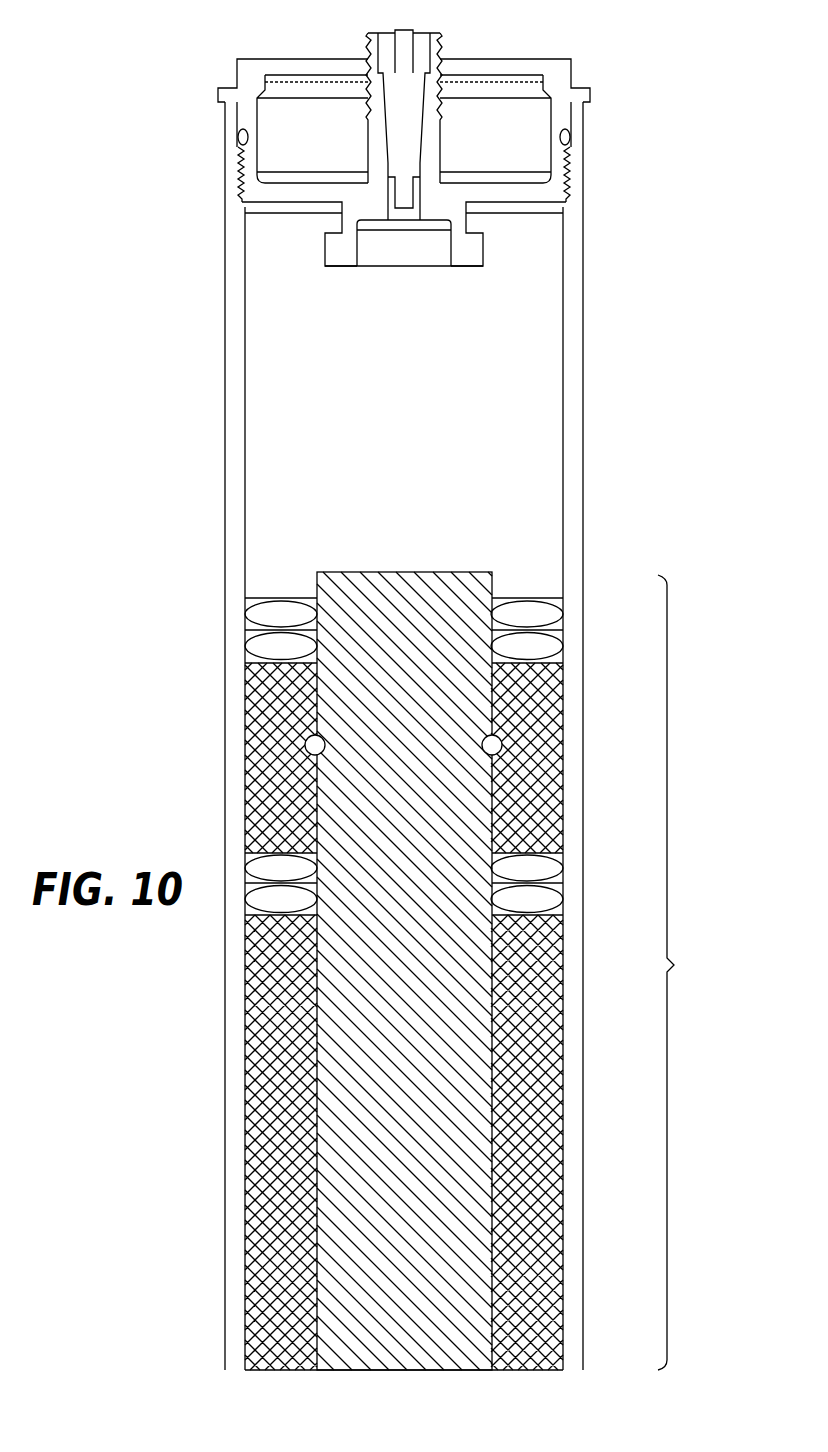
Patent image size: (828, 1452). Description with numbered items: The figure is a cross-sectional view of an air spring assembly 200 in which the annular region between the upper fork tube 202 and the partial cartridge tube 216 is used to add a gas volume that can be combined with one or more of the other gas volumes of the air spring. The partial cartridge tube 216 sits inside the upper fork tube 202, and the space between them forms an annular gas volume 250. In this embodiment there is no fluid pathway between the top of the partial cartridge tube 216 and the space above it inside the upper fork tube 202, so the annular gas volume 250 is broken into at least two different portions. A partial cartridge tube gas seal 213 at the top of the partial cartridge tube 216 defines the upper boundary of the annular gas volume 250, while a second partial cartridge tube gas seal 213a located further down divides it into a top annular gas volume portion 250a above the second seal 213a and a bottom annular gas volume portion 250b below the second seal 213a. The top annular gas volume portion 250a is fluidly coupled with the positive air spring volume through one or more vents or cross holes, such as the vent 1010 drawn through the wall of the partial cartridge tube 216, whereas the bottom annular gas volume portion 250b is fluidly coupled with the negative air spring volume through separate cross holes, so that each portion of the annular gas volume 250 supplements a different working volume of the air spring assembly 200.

The air spring assembly 200 is at (520, 34).
The upper fork tube 202 is at (572, 432).
The partial cartridge tube 216 is at (468, 570).
The partial cartridge tube gas seal 213 is at (552, 645).
The second partial cartridge tube gas seal 213a is at (553, 900).
The annular gas volume 250 is at (688, 972).
The top annular gas volume portion 250a is at (557, 780).
The bottom annular gas volume portion 250b is at (564, 1311).
The vent 1010 is at (303, 741).